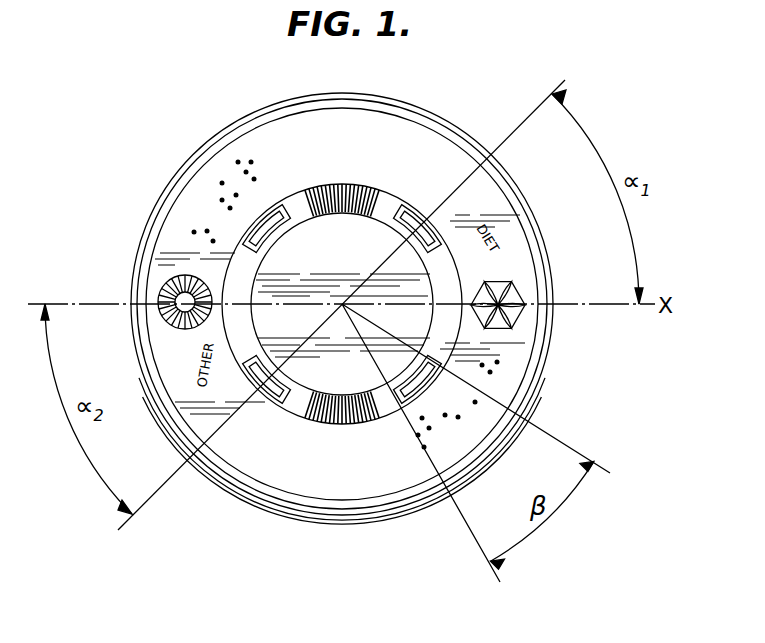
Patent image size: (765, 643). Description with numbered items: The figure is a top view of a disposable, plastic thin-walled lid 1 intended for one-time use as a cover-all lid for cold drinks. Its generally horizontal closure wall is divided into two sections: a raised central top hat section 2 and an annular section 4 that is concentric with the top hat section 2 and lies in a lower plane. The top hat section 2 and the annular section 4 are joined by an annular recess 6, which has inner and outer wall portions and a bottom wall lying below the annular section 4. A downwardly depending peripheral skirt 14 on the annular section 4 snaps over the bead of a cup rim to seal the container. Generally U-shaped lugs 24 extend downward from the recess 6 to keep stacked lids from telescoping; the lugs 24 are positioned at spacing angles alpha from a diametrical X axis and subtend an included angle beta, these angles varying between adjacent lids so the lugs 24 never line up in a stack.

The lid 1 is at (190, 138).
The peripheral skirt 14 is at (152, 212).
The annular section 4 is at (250, 467).
The annular recess 6 is at (318, 187).
The lugs 24 is at (427, 373).
The top hat section 2 is at (353, 232).